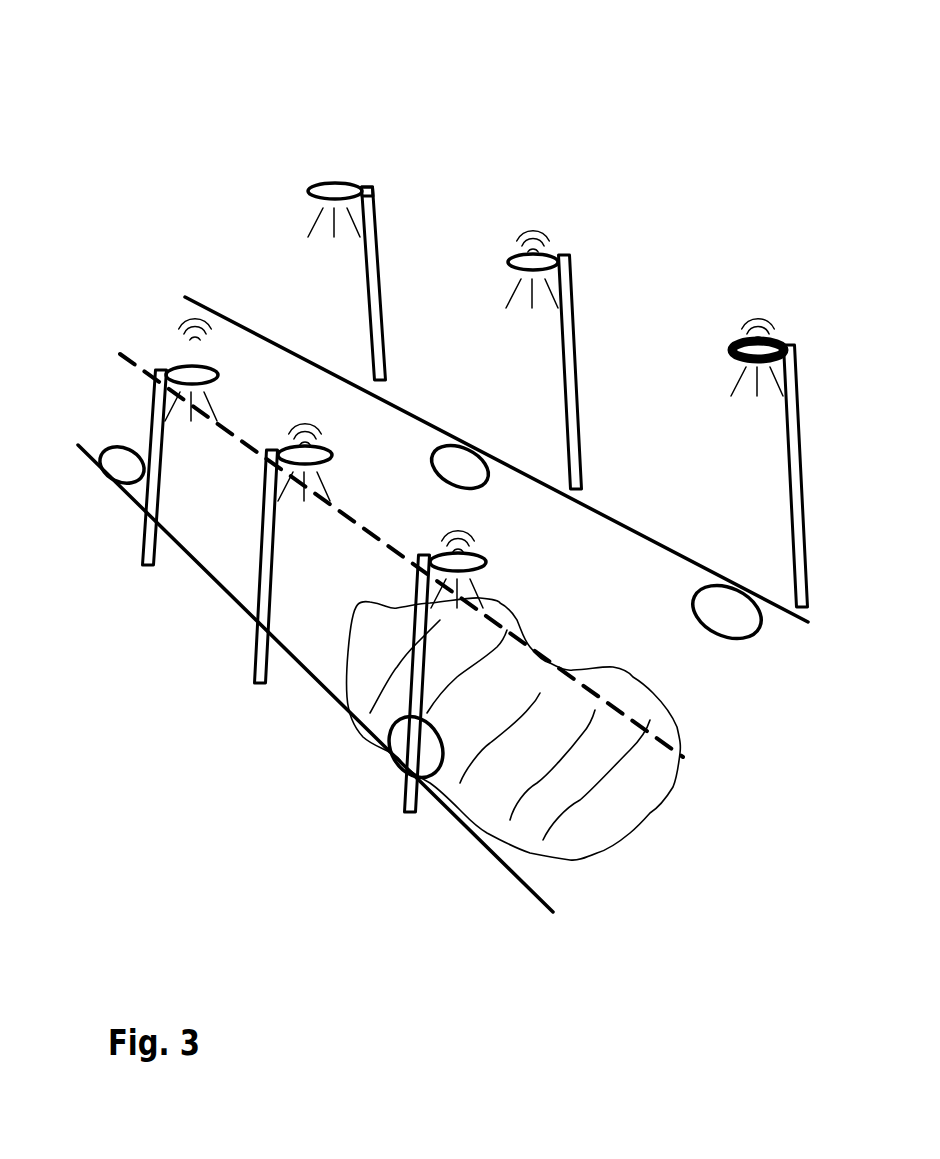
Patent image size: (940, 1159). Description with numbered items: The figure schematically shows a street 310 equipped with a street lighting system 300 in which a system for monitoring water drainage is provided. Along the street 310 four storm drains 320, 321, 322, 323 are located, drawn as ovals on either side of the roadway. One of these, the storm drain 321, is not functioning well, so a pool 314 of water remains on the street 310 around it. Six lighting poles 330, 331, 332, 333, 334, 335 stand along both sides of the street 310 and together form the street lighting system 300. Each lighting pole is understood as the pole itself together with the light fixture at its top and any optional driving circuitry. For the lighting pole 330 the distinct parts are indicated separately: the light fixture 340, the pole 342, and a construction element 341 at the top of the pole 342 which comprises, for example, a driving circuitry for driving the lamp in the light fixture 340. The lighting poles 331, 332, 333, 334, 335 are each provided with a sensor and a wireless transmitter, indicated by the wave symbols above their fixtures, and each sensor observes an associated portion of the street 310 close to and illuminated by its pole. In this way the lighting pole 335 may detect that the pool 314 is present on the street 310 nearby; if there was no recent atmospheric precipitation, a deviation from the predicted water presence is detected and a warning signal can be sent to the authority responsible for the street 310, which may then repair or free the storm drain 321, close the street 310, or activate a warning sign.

The street lighting system 300 is at (152, 97).
The street 310 is at (165, 323).
The pool 314 is at (600, 825).
The storm drain 320 is at (120, 467).
The storm drain 321 is at (397, 745).
The storm drain 322 is at (460, 467).
The storm drain 323 is at (720, 610).
The lighting pole 330 is at (369, 160).
The lighting pole 331 is at (583, 343).
The lighting pole 332 is at (788, 333).
The lighting pole 333 is at (148, 577).
The lighting pole 334 is at (262, 690).
The lighting pole 335 is at (410, 822).
The light fixture 340 is at (337, 181).
The construction element 341 is at (370, 186).
The pole 342 is at (370, 237).